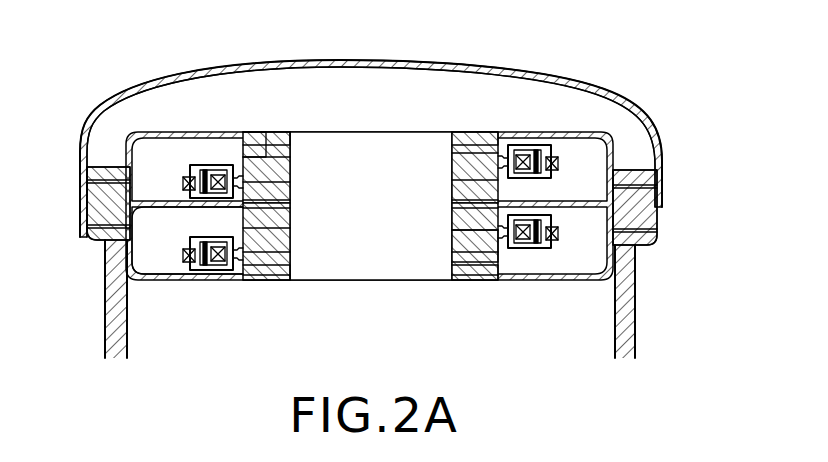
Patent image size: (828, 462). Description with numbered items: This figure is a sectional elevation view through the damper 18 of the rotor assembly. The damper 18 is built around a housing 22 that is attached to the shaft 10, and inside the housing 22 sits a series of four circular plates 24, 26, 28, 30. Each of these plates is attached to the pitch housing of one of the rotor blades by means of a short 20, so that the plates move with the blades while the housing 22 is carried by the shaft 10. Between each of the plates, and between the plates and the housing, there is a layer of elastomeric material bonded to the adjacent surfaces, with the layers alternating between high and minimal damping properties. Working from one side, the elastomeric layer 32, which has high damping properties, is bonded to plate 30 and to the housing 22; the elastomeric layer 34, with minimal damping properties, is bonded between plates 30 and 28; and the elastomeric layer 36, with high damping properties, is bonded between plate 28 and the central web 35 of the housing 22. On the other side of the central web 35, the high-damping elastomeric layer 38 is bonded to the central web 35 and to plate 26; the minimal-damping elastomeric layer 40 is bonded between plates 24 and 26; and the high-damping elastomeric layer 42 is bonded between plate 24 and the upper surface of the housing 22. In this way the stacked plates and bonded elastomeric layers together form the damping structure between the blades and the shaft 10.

The shaft 10 is at (637, 326).
The damper 18 is at (486, 72).
The short 20 is at (543, 145).
The housing 22 is at (465, 280).
The circular plate 24 is at (452, 148).
The circular plate 26 is at (288, 168).
The circular plate 28 is at (452, 243).
The circular plate 30 is at (289, 236).
The elastomeric layer 32 is at (260, 280).
The elastomeric layer 34 is at (252, 238).
The central web 35 is at (588, 203).
The elastomeric layer 36 is at (452, 216).
The elastomeric layer 38 is at (250, 133).
The elastomeric layer 40 is at (487, 138).
The elastomeric layer 42 is at (258, 133).